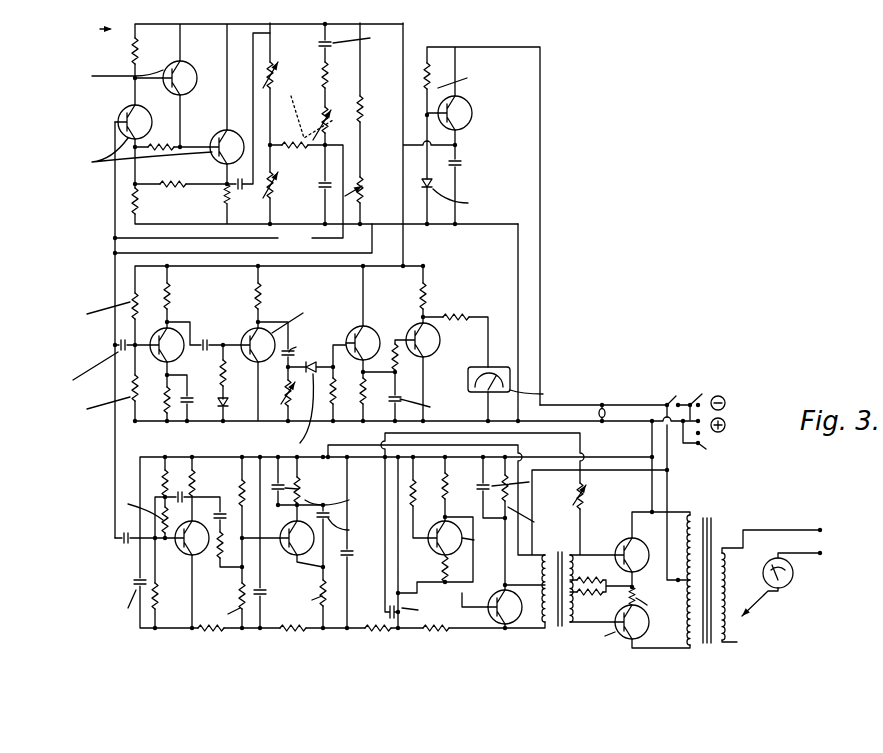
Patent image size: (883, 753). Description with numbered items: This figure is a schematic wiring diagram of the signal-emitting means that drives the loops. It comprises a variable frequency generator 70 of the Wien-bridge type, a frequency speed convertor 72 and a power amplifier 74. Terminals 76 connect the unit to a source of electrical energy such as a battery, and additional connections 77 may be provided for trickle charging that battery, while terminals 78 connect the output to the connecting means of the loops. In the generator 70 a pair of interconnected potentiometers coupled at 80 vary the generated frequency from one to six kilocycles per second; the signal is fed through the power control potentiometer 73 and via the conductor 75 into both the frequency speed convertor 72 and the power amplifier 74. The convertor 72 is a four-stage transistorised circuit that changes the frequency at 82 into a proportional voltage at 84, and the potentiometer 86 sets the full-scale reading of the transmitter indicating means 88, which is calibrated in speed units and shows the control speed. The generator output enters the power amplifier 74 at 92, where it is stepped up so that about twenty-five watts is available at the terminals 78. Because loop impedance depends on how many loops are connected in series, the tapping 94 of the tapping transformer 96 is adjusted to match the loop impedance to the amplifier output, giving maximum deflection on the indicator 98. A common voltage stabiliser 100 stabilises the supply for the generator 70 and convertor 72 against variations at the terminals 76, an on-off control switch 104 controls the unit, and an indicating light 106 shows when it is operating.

The variable frequency generator 70 is at (106, 220).
The frequency speed convertor 72 is at (110, 425).
The power control potentiometer 73 is at (372, 171).
The power amplifier 74 is at (111, 627).
The conductor 75 is at (112, 254).
The terminals 76 is at (702, 401).
The additional connections 77 is at (697, 446).
The terminals 78 is at (823, 527).
The coupled potentiometers 80 is at (288, 110).
The frequency input 82 is at (108, 342).
The proportional voltage output 84 is at (418, 319).
The potentiometer 86 is at (470, 313).
The transmitter indicating means 88 is at (513, 379).
The power amplifier input 92 is at (120, 545).
The tapping 94 is at (752, 616).
The tapping transformer 96 is at (728, 540).
The indicator 98 is at (797, 581).
The common voltage stabiliser 100 is at (540, 41).
The on-off control switch 104 is at (670, 400).
The indicating light 106 is at (604, 404).